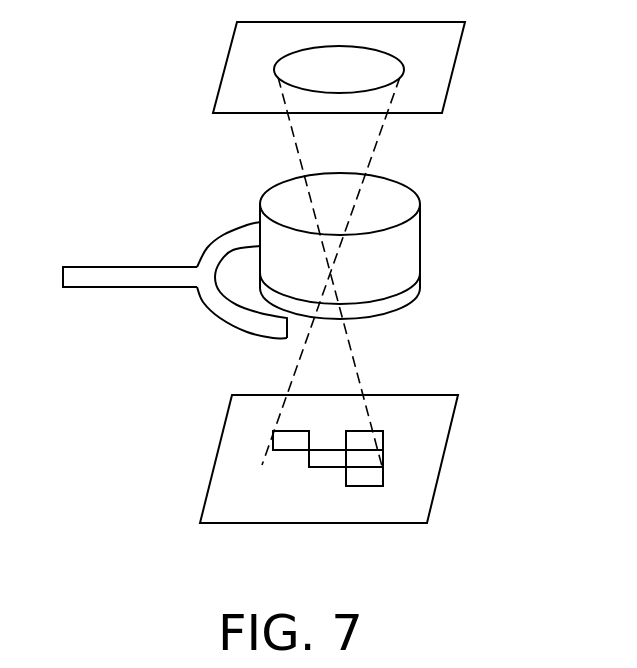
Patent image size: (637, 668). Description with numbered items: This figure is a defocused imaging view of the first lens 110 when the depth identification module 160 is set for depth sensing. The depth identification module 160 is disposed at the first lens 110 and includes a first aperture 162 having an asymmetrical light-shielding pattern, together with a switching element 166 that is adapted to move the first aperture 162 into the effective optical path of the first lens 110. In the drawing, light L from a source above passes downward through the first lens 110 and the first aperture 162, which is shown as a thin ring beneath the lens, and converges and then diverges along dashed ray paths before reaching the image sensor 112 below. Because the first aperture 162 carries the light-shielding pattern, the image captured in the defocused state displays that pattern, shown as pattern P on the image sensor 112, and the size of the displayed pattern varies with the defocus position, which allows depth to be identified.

The light L is at (404, 67).
The first lens 110 is at (413, 247).
The first aperture 162 is at (413, 292).
The depth identification module 160 is at (170, 230).
The switching element 166 is at (103, 288).
The image sensor 112 is at (438, 439).
The pattern P is at (365, 477).